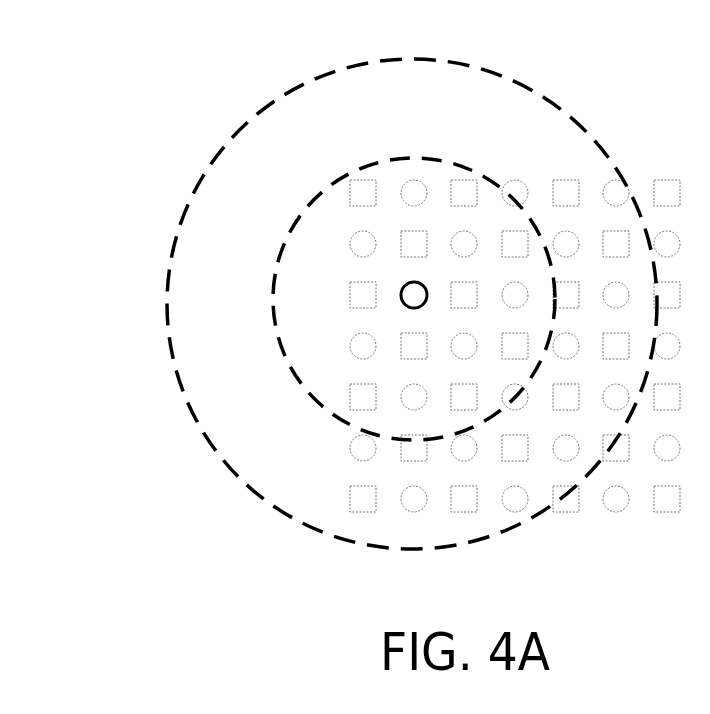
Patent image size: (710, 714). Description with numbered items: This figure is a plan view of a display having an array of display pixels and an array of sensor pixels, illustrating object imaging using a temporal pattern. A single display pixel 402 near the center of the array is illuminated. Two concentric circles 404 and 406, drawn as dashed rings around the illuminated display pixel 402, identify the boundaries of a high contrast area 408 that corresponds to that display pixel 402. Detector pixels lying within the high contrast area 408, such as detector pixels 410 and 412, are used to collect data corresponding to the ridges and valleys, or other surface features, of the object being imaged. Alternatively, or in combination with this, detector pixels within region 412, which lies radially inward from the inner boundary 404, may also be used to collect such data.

The display pixel 402 is at (401, 290).
The concentric circle 404 is at (418, 157).
The concentric circle 406 is at (440, 61).
The high contrast area 408 is at (278, 150).
The detector pixel 410 is at (567, 180).
The detector pixel 412 is at (318, 332).